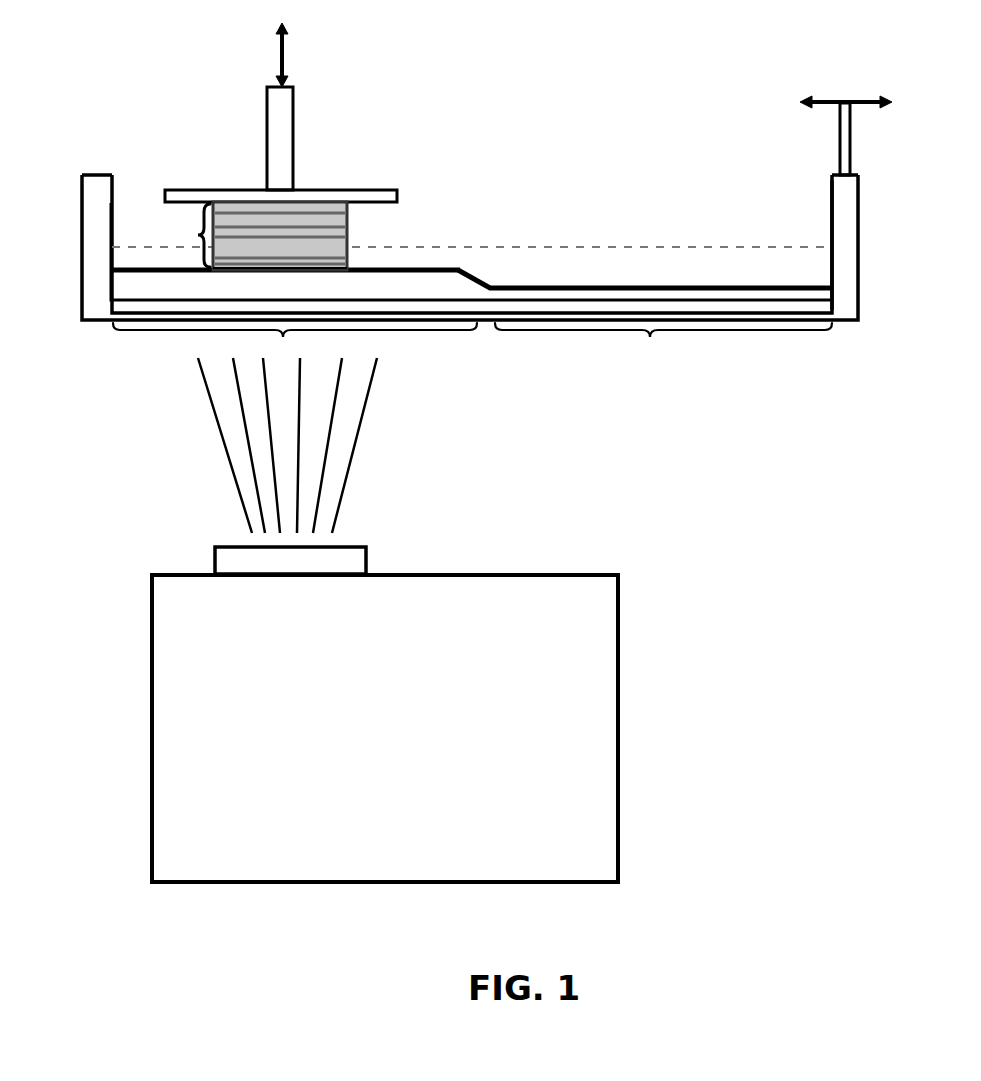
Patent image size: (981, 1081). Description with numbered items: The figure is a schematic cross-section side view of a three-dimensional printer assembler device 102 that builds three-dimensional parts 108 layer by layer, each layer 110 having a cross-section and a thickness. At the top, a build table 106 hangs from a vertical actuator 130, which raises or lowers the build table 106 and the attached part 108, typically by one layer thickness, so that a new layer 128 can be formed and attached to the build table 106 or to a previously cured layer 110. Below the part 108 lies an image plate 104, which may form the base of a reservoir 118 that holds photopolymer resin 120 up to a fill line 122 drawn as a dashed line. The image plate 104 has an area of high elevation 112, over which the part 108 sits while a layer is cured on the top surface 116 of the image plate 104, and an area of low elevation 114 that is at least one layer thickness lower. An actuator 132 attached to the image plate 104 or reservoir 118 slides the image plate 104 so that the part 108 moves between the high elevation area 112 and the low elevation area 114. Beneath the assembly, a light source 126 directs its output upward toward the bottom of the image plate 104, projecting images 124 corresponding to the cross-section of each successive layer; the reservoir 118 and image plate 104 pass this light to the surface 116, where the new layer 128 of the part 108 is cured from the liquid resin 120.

The 3D printer assembler device 102 is at (785, 557).
The image plate 104 is at (145, 285).
The build table 106 is at (363, 190).
The three-dimensional part 108 is at (196, 232).
The layer 110 is at (347, 222).
The area of high elevation 112 is at (283, 337).
The area of low elevation 114 is at (650, 337).
The surface of image plate 116 is at (170, 270).
The reservoir 118 is at (840, 228).
The photopolymer resin 120 is at (657, 270).
The fill line 122 is at (545, 246).
The projected images 124 is at (362, 458).
The light source 126 is at (527, 637).
The new layer 128 is at (343, 266).
The vertical actuator 130 is at (285, 64).
The actuator 132 is at (845, 150).